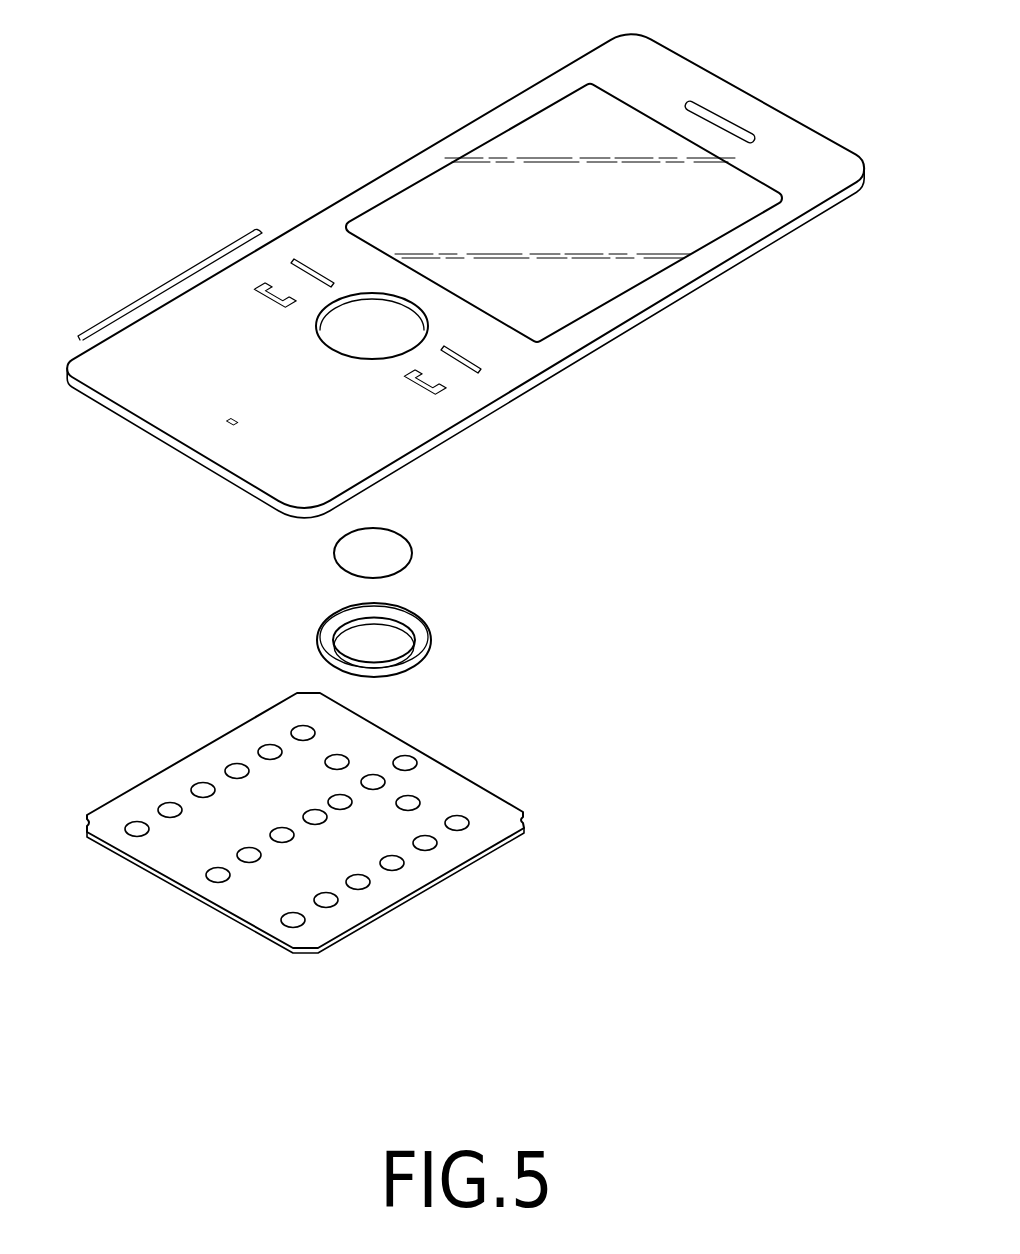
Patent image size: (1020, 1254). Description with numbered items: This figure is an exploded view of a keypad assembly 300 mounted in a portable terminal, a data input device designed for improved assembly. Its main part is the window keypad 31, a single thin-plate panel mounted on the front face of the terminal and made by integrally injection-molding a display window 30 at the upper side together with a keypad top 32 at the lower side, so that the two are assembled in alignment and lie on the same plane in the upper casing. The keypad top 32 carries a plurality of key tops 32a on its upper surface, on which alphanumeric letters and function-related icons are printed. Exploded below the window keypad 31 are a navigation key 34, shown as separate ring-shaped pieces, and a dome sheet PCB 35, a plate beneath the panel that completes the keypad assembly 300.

The keypad assembly 300 is at (866, 53).
The display window 30 is at (693, 230).
The window keypad 31 is at (421, 198).
The keypad top 32 is at (274, 345).
The key top 32a is at (198, 410).
The navigation key 34 is at (443, 528).
The dome sheet PCB 35 is at (513, 768).